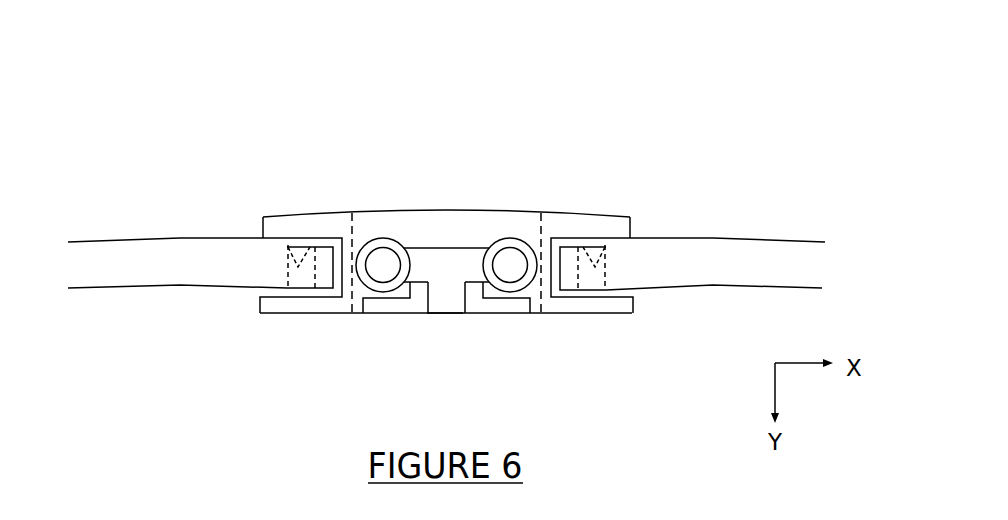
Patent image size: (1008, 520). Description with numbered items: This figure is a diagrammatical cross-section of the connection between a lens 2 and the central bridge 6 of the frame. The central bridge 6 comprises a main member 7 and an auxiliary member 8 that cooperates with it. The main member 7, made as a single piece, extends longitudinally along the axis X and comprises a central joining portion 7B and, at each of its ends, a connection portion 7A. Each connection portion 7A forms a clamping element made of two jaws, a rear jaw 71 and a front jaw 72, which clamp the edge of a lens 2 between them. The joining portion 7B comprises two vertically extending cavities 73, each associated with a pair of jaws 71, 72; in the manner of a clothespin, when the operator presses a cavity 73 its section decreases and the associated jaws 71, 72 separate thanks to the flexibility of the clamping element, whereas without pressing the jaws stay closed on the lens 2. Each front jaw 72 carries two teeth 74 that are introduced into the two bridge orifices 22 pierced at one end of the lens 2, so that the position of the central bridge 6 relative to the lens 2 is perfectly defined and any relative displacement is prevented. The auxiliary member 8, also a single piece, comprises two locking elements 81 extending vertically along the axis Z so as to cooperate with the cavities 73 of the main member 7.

The central bridge 6 is at (472, 117).
The main member 7 is at (466, 210).
The connection portion 7A is at (256, 205).
The central joining portion 7B is at (412, 157).
The front jaw 72 is at (280, 217).
The rear jaw 71 is at (300, 313).
The cavity 73 is at (363, 298).
The tooth 74 is at (310, 246).
The locking element 81 is at (388, 262).
The auxiliary member 8 is at (448, 280).
The lens 2 is at (142, 245).
The bridge orifice 22 is at (298, 284).